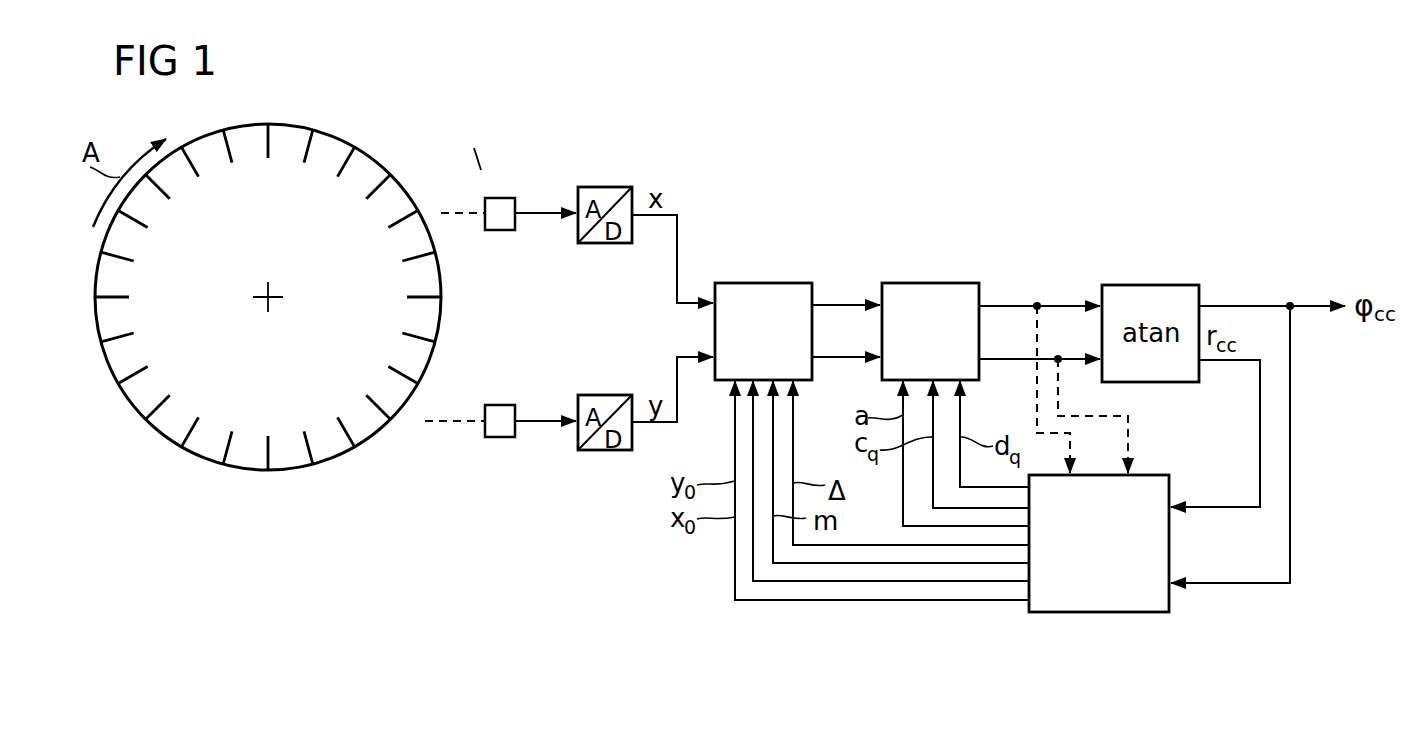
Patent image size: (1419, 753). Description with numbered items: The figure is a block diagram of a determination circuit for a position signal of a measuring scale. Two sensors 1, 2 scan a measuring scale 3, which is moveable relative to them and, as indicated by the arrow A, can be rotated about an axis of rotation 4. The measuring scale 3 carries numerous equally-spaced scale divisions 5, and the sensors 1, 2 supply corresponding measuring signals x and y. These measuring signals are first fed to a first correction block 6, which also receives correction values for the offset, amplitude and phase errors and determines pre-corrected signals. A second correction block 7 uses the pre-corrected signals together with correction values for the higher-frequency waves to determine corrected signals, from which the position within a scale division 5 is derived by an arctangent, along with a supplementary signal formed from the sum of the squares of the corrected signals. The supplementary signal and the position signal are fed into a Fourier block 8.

The sensor 1 is at (500, 198).
The sensor 2 is at (500, 405).
The measuring scale 3 is at (290, 125).
The axis of rotation 4 is at (270, 299).
The scale divisions 5 is at (268, 158).
The first correction block 6 is at (762, 283).
The second correction block 7 is at (930, 283).
The Fourier block 8 is at (1100, 612).